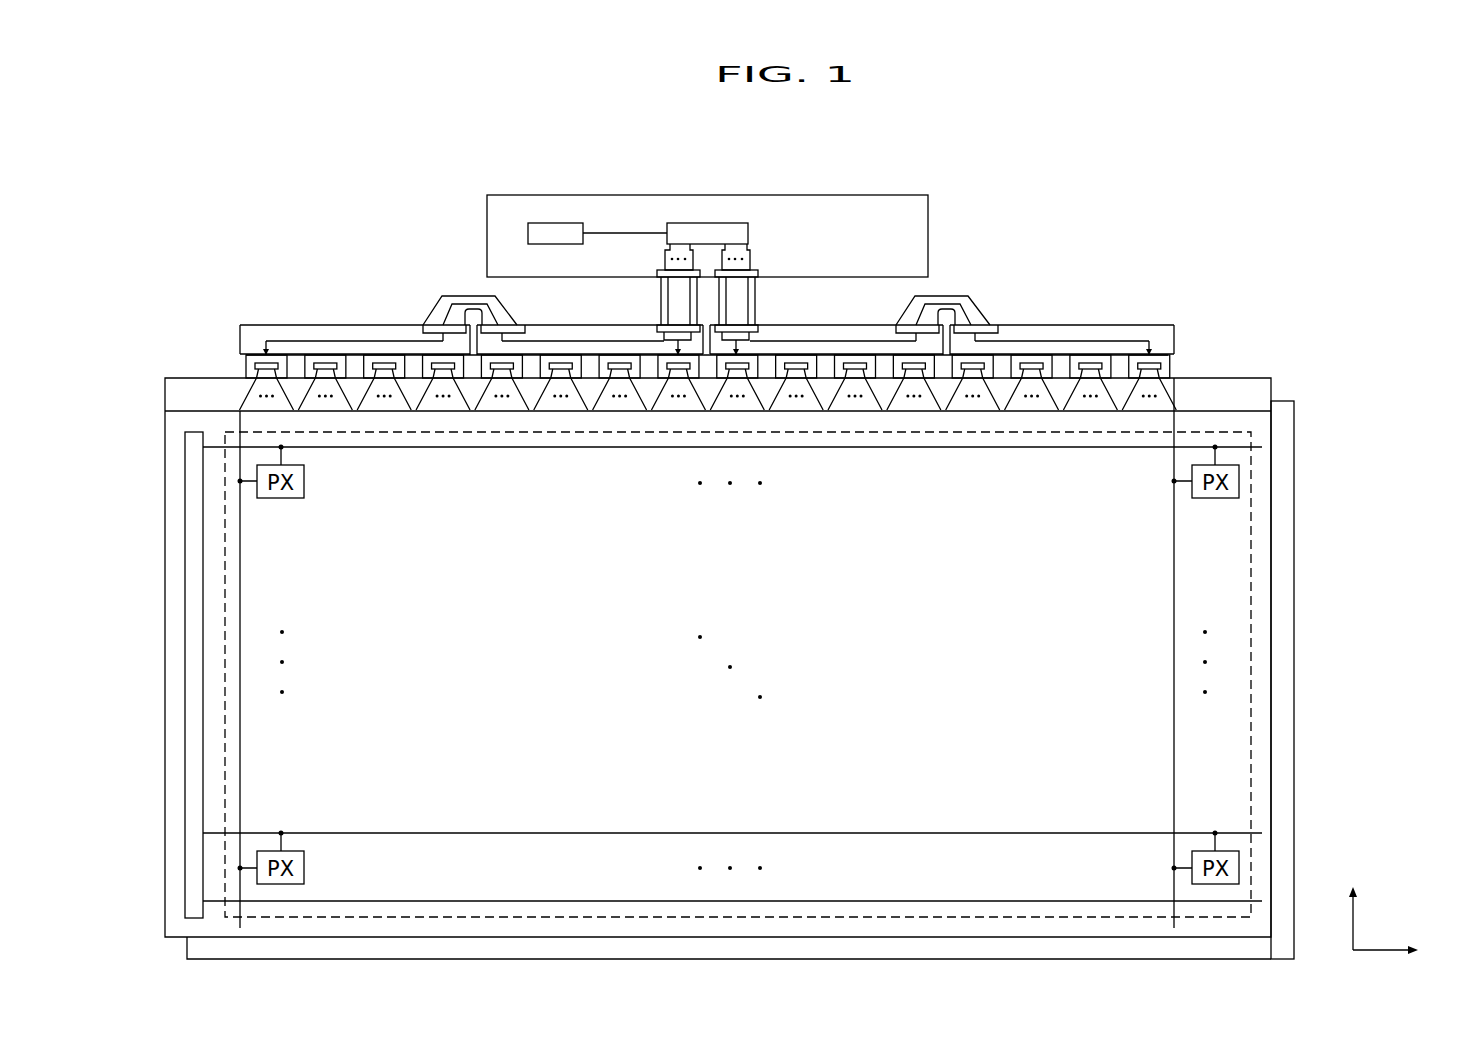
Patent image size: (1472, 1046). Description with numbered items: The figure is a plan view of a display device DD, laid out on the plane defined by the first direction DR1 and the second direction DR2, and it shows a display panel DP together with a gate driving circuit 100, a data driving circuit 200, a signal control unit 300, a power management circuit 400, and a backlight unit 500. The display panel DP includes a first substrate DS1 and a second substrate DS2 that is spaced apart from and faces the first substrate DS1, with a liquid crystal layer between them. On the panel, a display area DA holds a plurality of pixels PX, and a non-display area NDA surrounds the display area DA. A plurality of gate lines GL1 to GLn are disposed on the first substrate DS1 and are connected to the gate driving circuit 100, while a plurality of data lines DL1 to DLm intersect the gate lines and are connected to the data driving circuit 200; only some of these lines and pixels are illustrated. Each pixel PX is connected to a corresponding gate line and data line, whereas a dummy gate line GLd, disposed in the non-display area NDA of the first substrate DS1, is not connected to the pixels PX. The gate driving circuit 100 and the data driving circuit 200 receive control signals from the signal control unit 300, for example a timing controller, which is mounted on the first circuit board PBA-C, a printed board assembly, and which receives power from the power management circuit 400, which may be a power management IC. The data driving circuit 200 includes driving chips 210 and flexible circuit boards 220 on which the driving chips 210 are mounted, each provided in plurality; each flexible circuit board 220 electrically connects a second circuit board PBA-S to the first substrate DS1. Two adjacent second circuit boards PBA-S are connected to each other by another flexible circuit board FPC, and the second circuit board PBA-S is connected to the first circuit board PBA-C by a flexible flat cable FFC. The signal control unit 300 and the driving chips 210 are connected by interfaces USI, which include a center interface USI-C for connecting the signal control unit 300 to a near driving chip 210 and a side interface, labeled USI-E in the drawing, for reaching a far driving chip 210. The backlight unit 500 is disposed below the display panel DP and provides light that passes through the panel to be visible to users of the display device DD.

The display device DD is at (1172, 172).
The gate driving circuit 100 is at (185, 673).
The data driving circuit 200 is at (148, 324).
The driving chip 210 is at (252, 368).
The flexible circuit board 220 is at (240, 339).
The signal control unit 300 is at (749, 233).
The power management circuit 400 is at (555, 223).
The backlight unit 500 is at (1294, 432).
The interfaces USI is at (742, 127).
The USI expansion terminal USI-E is at (664, 262).
The center interface USI-C is at (693, 262).
The first circuit board PBA-C is at (867, 195).
The second circuit board PBA-S is at (1115, 324).
The flexible flat cable FFC is at (657, 302).
The flexible circuit board FPC is at (946, 299).
The display panel DP is at (1282, 312).
The first substrate DS1 is at (1213, 378).
The second substrate DS2 is at (1242, 410).
The display area DA is at (1251, 530).
The non-display area NDA is at (1262, 578).
The pixel PX is at (739, 665).
The gate line GL1 is at (570, 447).
The gate line GLn is at (570, 833).
The dummy gate line GLd is at (613, 901).
The data line DL1 is at (240, 570).
The data line DLm is at (1174, 570).
The first direction DR1 is at (1409, 951).
The second direction DR2 is at (1354, 904).